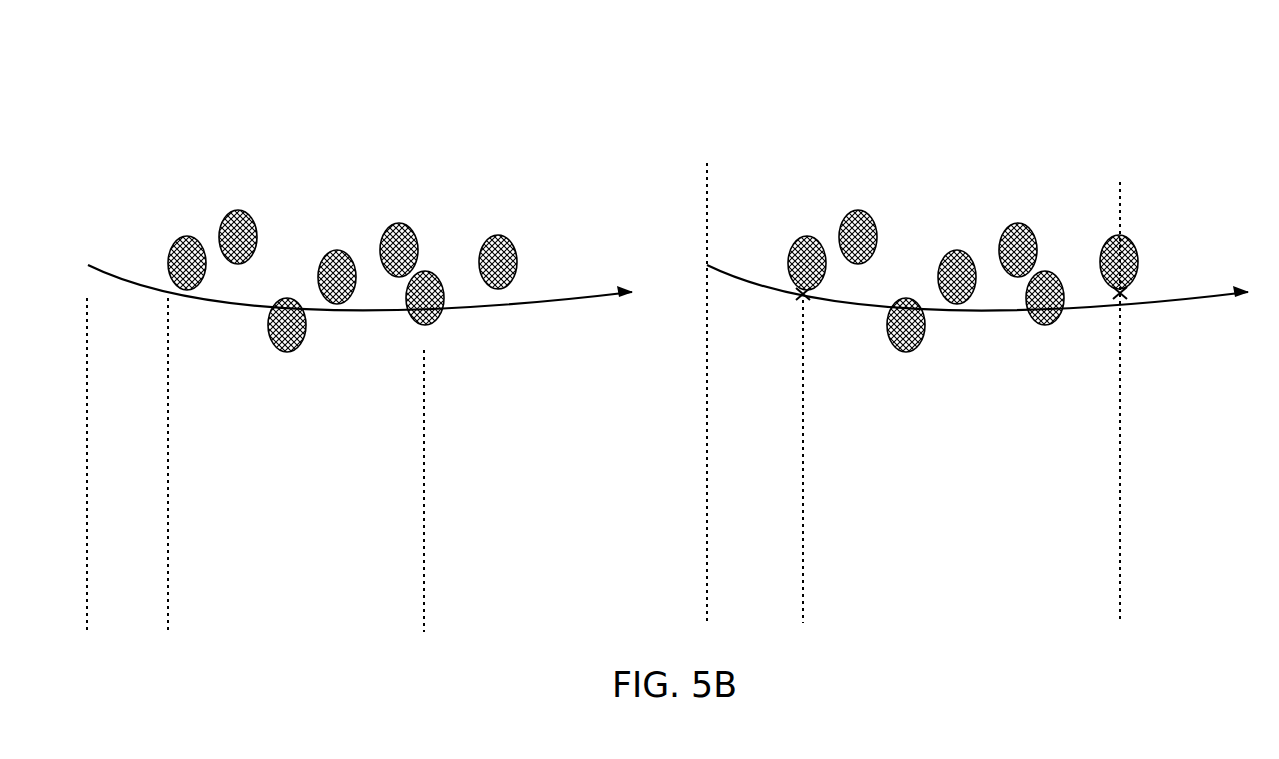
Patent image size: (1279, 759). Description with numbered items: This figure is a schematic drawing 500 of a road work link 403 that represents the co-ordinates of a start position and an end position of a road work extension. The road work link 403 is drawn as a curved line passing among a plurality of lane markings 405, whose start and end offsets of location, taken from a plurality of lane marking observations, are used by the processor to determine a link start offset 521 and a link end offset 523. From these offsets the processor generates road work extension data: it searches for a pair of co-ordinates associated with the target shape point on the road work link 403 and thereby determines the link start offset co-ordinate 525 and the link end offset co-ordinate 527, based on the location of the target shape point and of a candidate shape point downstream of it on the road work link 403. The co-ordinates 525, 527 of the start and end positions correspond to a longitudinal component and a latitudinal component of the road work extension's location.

The schematic drawing 500 is at (1118, 74).
The road work link 403 is at (540, 300).
The lane marking 405 is at (518, 223).
The link start offset 521 is at (168, 421).
The link end offset 523 is at (424, 585).
The link start offset co-ordinate 525 is at (806, 298).
The link end offset co-ordinate 527 is at (1124, 298).